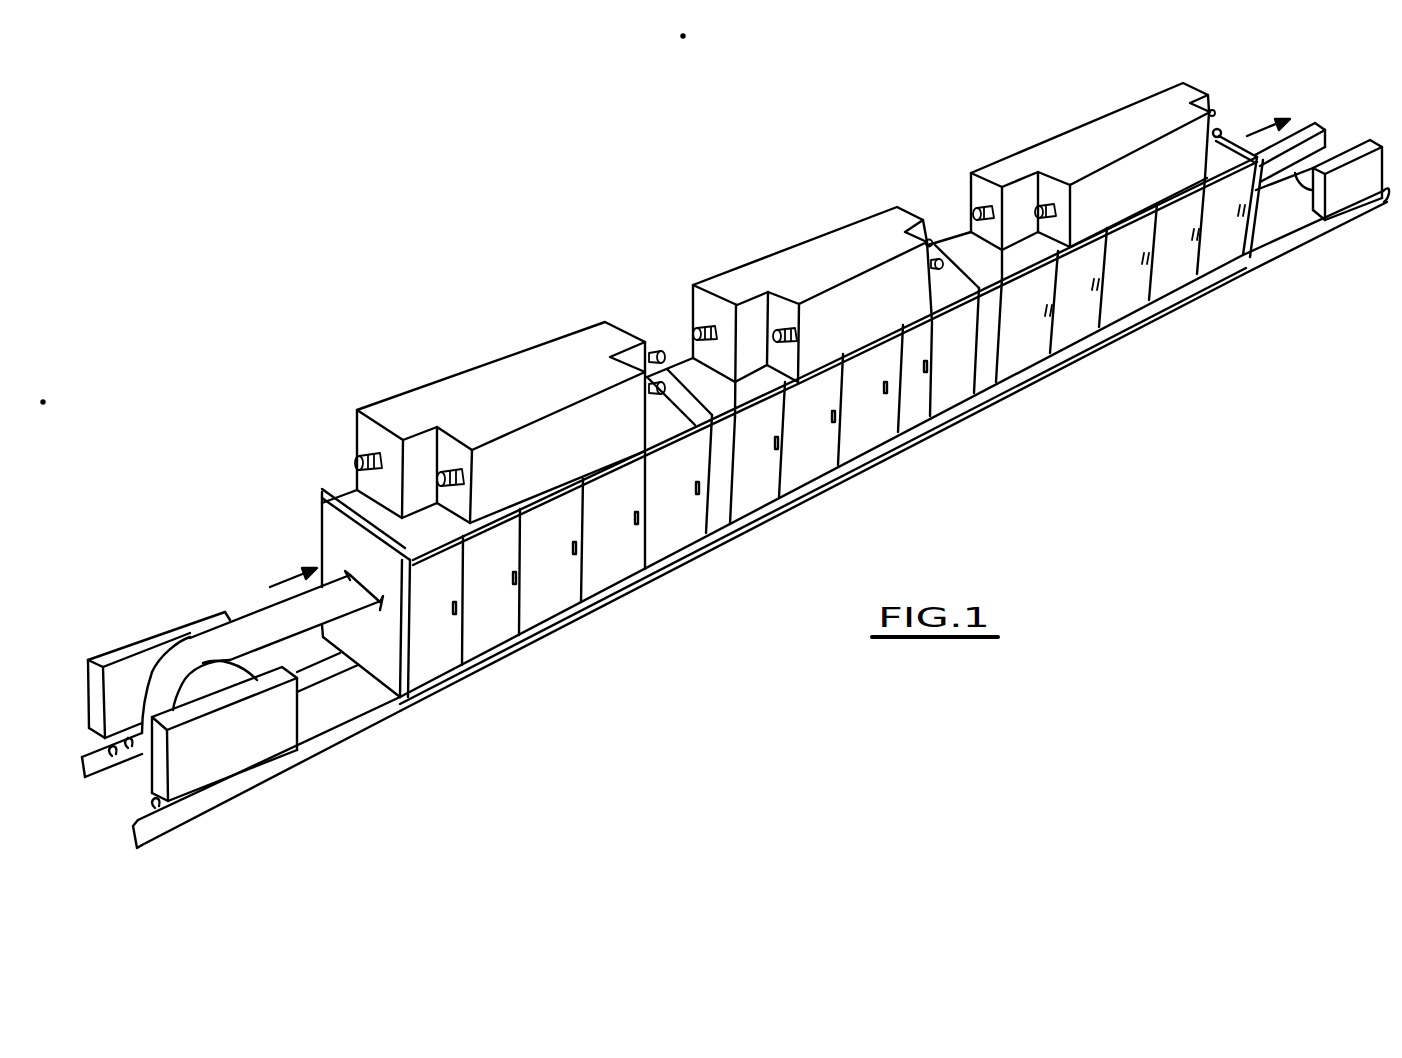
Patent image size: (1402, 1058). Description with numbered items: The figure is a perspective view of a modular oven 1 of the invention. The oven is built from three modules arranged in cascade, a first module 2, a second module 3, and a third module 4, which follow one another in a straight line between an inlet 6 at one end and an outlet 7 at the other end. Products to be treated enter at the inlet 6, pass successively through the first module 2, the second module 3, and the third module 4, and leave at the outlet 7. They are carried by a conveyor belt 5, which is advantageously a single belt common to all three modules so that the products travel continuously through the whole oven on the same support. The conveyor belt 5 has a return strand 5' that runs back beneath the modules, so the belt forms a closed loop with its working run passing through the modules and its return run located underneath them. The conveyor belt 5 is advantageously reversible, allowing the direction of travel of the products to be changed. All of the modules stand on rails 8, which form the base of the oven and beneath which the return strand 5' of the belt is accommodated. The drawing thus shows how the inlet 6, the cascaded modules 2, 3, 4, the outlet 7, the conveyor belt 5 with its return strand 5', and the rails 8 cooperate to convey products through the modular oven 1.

The modular oven 1 is at (566, 196).
The first module 2 is at (450, 370).
The second module 3 is at (781, 244).
The third module 4 is at (1058, 134).
The conveyor belt 5 is at (735, 416).
The return strand 5' is at (255, 734).
The inlet 6 is at (332, 532).
The outlet 7 is at (1235, 133).
The rails 8 is at (340, 660).